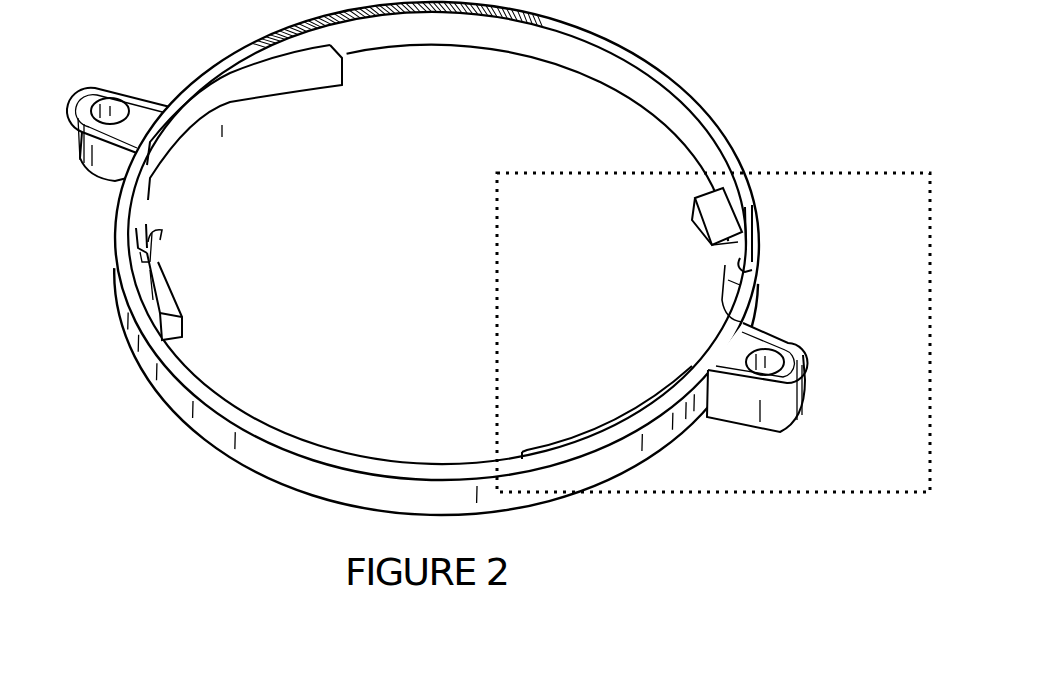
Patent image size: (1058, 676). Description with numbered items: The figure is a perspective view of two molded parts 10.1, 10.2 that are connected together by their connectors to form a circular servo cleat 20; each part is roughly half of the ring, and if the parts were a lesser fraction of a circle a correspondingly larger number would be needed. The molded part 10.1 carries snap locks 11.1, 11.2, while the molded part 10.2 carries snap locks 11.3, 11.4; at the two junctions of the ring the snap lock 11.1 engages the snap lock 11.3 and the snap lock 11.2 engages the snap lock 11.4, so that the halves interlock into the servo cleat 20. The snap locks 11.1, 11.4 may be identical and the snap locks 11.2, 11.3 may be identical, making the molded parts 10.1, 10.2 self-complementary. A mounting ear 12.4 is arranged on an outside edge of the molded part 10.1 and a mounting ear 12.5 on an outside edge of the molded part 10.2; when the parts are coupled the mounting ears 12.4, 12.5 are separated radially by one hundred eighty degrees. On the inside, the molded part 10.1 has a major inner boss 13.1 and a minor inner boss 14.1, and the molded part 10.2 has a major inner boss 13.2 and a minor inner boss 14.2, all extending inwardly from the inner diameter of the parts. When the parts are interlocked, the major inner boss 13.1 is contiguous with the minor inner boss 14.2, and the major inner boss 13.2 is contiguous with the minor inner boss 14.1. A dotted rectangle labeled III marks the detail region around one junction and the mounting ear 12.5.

The servo cleat 20 is at (138, 455).
The molded part 10.1 is at (330, 114).
The molded part 10.2 is at (450, 418).
The snap lock 11.1 is at (738, 242).
The snap lock 11.2 is at (140, 250).
The snap lock 11.3 is at (740, 273).
The snap lock 11.4 is at (152, 233).
The mounting ear 12.4 is at (97, 103).
The mounting ear 12.5 is at (780, 348).
The major inner boss 13.1 is at (182, 148).
The major inner boss 13.2 is at (648, 390).
The minor inner boss 14.1 is at (700, 196).
The minor inner boss 14.2 is at (133, 313).
The detail region of FIG. 3 III is at (812, 172).